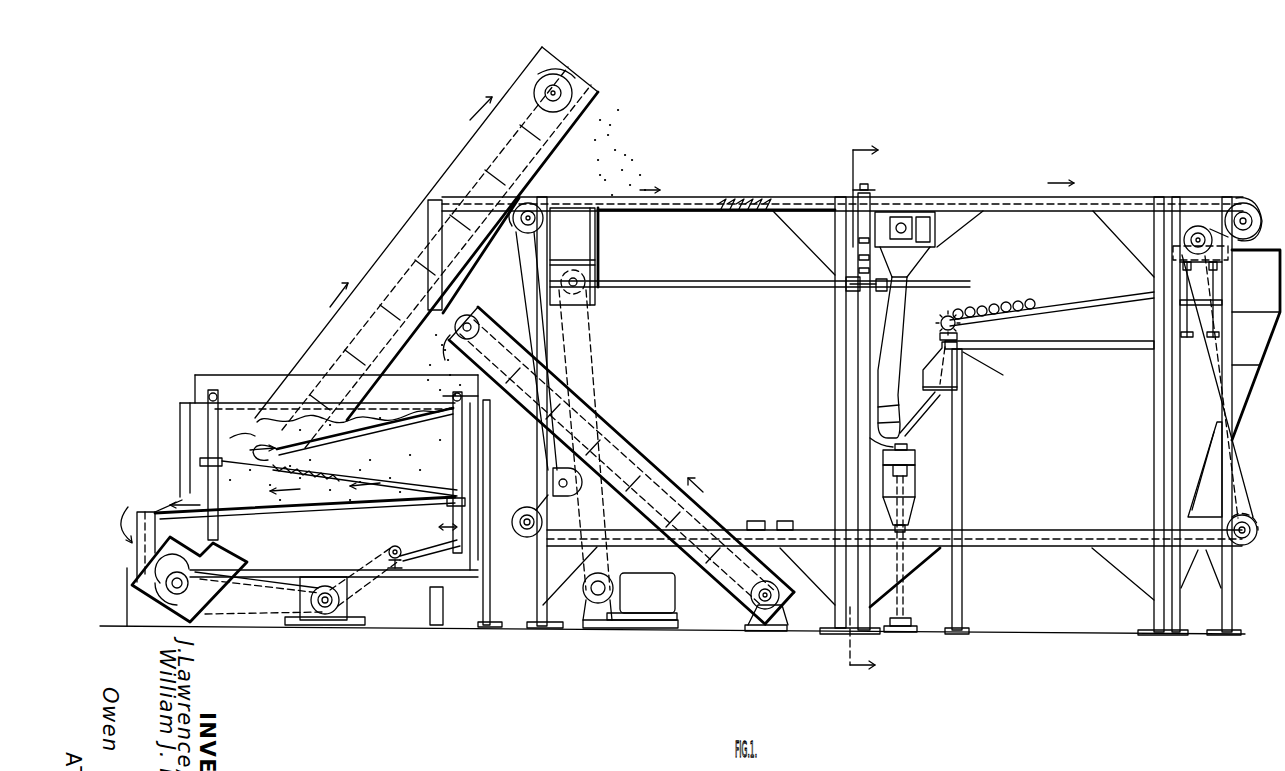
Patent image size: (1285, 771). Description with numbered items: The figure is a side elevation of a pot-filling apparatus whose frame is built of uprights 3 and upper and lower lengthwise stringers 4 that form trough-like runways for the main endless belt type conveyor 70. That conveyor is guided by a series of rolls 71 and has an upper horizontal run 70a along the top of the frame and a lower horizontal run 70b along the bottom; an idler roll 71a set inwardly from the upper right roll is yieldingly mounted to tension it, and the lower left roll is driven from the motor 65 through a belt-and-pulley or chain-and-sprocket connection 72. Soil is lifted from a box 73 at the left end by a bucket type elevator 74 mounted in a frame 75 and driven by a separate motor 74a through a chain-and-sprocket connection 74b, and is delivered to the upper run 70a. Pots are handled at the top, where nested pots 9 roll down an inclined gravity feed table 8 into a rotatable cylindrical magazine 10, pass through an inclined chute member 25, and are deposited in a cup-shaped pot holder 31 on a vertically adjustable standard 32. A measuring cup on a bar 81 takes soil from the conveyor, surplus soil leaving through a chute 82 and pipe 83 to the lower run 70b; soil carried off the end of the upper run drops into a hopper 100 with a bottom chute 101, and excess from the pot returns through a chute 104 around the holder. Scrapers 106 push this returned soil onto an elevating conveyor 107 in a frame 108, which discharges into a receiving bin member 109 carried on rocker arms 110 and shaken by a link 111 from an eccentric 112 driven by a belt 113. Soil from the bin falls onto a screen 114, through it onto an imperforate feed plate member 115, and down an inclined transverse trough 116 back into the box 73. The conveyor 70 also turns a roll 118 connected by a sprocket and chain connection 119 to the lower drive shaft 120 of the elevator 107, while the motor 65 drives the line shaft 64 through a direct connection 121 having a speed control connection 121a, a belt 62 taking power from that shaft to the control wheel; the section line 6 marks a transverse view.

The uprights 3 is at (543, 303).
The stringers 4 is at (648, 212).
The section line 6- 6 is at (852, 408).
The inclined gravity feed table 8 is at (1092, 296).
The nested pots 9 is at (1008, 305).
The rotatable cylindrical magazine 10 is at (940, 328).
The inclined chute member 25 is at (914, 434).
The pot holder 31 is at (893, 447).
The vertically adjustable standard 32 is at (898, 600).
The belt 62 is at (846, 285).
The line shaft 64 is at (780, 265).
The motor 65 is at (630, 600).
The main endless belt type conveyor 70 is at (528, 272).
The upper horizontal run 70a is at (752, 205).
The lower horizontal run 70b is at (1056, 548).
The guide rolls 71 is at (514, 226).
The idler tensioning roll 71a is at (1184, 240).
The belt-and-pulley or chain-and-sprocket connection 72 is at (530, 560).
The box 73 is at (132, 585).
The bucket type elevator 74 is at (327, 330).
The separate motor 74a is at (305, 625).
The chain-and-sprocket connection 74b is at (258, 612).
The elevator frame 75 is at (382, 262).
The bar 81 is at (890, 229).
The chute 82 is at (915, 258).
The pipe 83 is at (898, 312).
The hopper 100 is at (1235, 383).
The bottom chute 101 is at (1242, 390).
The chute 104 is at (915, 500).
The scrapers 106 is at (785, 521).
The elevating conveyor 107 is at (622, 425).
The conveyor frame 108 is at (757, 521).
The receiving bin member 109 is at (393, 423).
The rocker arms 110 is at (205, 420).
The link 111 is at (440, 545).
The eccentric 112 is at (390, 545).
The belt 113 is at (366, 590).
The screen 114 is at (318, 472).
The imperforate feed plate member 115 is at (290, 520).
The inclined transverse trough 116 is at (137, 545).
The roll 118 is at (556, 470).
The sprocket wheel and chain connection 119 is at (693, 580).
The lower drive shaft 120 is at (778, 606).
The drive connection 121 is at (598, 360).
The speed control connection 121a is at (590, 282).